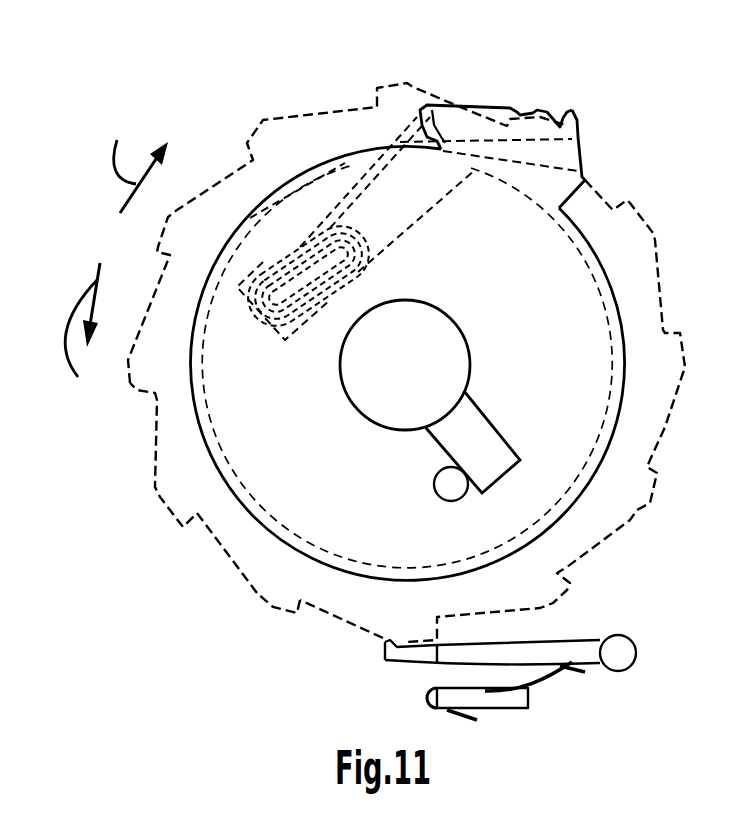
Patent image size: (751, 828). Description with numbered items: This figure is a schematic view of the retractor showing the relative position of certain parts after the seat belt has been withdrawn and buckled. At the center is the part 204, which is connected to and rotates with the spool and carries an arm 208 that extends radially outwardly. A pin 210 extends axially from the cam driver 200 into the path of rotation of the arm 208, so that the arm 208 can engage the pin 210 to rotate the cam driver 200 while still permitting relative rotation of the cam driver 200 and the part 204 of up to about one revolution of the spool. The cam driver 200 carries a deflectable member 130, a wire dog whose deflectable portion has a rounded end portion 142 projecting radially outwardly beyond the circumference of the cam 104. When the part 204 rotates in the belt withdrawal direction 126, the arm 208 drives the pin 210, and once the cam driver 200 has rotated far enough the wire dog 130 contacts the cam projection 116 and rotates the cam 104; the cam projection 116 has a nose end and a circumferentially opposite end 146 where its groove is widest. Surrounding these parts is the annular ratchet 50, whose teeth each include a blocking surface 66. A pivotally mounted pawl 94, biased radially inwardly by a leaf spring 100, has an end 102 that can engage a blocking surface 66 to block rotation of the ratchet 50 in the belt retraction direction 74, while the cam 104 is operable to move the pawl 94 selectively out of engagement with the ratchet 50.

The ratchet 50 is at (667, 427).
The blocking surface 66 is at (302, 605).
The belt retraction direction 74 is at (82, 332).
The pawl 94 is at (493, 652).
The leaf spring 100 is at (543, 680).
The end of the pawl 102 is at (385, 660).
The cam 104 is at (606, 251).
The cam projection 116 is at (586, 112).
The belt withdrawal direction 126 is at (131, 164).
The deflectable member 130 is at (276, 238).
The rounded end portion 142 is at (421, 120).
The circumferentially opposite end of the cam projection 146 is at (578, 150).
The cam driver 200 is at (590, 305).
The part 204 is at (457, 297).
The arm 208 is at (487, 442).
The pin 210 is at (449, 489).